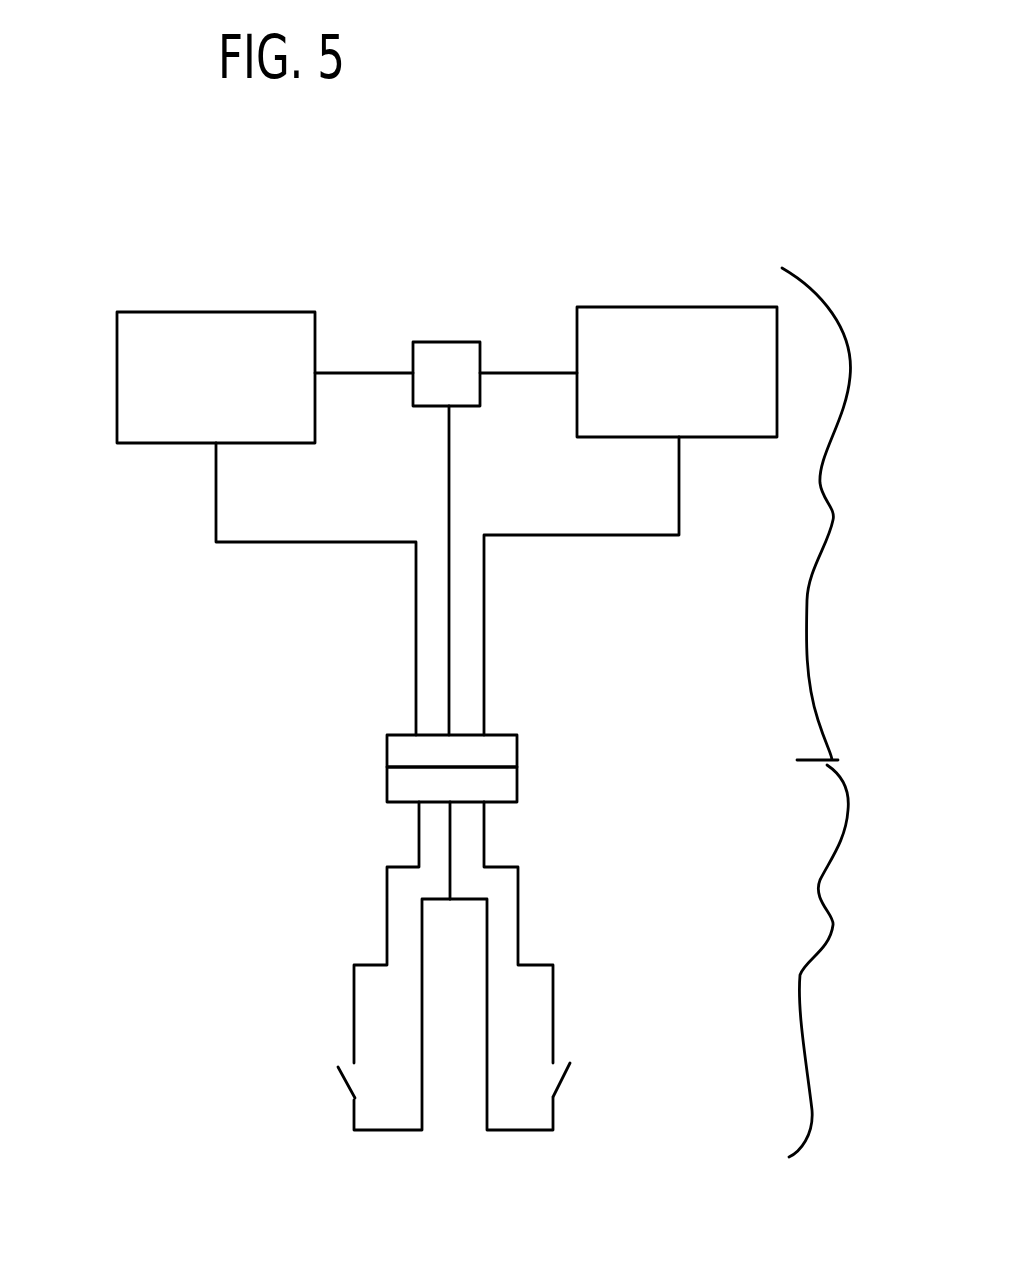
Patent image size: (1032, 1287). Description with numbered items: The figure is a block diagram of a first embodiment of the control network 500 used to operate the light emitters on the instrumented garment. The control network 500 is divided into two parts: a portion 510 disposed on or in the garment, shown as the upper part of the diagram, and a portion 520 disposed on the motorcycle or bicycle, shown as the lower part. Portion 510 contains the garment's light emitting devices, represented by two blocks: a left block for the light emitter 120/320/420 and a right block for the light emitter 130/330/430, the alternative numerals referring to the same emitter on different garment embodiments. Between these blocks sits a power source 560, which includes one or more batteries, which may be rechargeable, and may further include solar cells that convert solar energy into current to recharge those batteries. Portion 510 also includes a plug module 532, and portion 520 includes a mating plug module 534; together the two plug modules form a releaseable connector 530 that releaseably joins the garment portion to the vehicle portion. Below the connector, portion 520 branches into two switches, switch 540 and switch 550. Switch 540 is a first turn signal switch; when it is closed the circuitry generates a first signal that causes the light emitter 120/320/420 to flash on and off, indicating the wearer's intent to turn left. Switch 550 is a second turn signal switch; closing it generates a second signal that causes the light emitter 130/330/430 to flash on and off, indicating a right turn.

The control network 500 is at (125, 898).
The portion 510 is at (848, 514).
The portion 520 is at (857, 961).
The releaseable connector 530 is at (533, 734).
The plug module 532 is at (395, 742).
The plug module 534 is at (388, 778).
The switch 540 is at (345, 1085).
The switch 550 is at (563, 1082).
The power source 560 is at (443, 360).
The light emitter 120 is at (215, 351).
The light emitter 320 is at (220, 386).
The light emitter 420 is at (222, 425).
The light emitter 130 is at (690, 340).
The light emitter 330 is at (700, 377).
The light emitter 430 is at (707, 413).